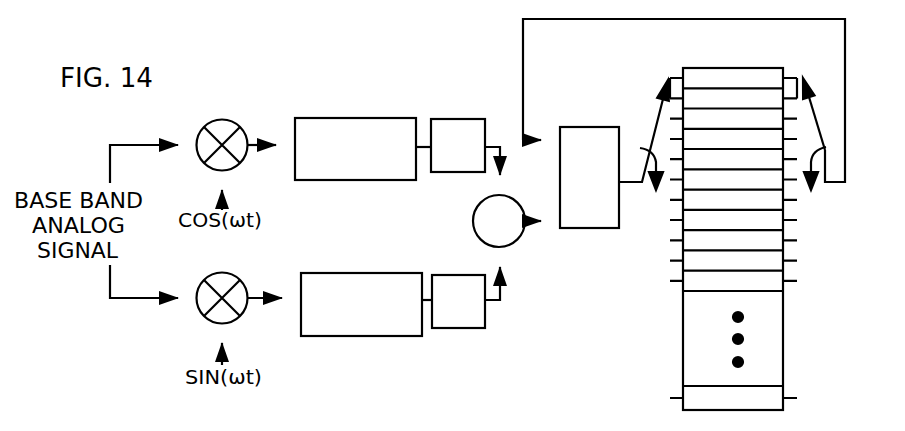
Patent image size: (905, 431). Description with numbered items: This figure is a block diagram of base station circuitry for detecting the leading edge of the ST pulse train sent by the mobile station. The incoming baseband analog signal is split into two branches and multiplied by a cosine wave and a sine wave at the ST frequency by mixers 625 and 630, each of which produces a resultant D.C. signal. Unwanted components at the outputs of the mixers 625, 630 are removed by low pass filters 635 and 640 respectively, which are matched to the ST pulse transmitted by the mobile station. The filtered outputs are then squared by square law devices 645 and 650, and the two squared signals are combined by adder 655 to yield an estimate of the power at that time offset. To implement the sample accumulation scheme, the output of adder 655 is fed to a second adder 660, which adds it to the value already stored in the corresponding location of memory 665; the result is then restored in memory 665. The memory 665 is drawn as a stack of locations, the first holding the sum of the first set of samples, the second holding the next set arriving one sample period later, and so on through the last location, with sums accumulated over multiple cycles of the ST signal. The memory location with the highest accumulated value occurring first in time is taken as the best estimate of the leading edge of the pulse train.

The mixer 625 is at (221, 119).
The mixer 630 is at (221, 272).
The low pass filter 635 is at (328, 118).
The low pass filter 640 is at (331, 273).
The square law device 645 is at (440, 119).
The square law device 650 is at (441, 275).
The adder 655 is at (512, 198).
The second adder 660 is at (571, 127).
The memory 665 is at (712, 68).